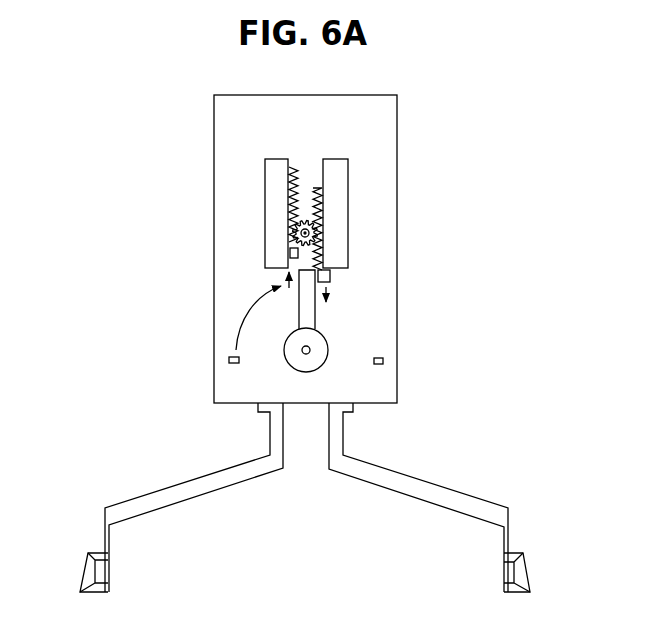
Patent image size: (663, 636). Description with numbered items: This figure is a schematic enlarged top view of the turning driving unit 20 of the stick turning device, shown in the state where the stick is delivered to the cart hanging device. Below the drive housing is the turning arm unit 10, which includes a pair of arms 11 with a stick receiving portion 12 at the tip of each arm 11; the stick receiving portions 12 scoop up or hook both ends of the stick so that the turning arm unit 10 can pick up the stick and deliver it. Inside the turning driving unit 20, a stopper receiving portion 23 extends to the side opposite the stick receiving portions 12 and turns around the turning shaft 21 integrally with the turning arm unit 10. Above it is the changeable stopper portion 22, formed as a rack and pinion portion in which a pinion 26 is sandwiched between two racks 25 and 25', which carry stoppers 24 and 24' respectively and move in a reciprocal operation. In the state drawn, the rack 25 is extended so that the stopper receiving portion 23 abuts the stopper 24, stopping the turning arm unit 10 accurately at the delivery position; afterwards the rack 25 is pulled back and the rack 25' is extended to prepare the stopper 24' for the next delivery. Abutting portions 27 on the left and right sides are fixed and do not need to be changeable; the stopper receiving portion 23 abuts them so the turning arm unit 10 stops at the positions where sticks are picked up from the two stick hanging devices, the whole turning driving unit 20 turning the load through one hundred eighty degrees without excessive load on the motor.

The turning arm unit 10 is at (137, 474).
The arm 11 is at (443, 490).
The stick receiving portion 12 is at (520, 572).
The turning driving unit 20 is at (404, 165).
The turning shaft 21 is at (306, 350).
The changeable stopper portion 22 is at (310, 178).
The stopper receiving portion 23 is at (307, 310).
The stopper 24 is at (354, 278).
The stopper 24' is at (259, 253).
The rack 25 is at (357, 213).
The rack 25' is at (254, 213).
The pinion 26 is at (313, 228).
The abutting portion 27 is at (233, 364).